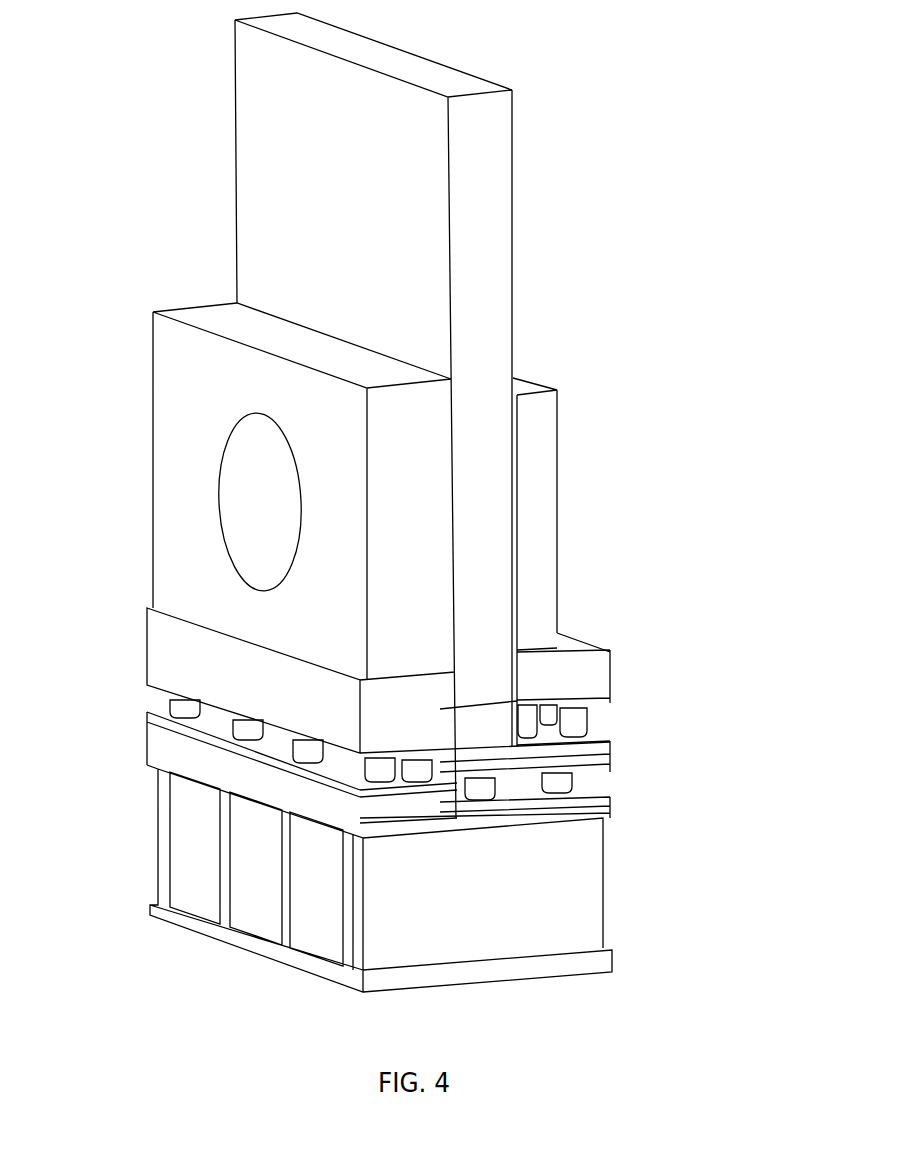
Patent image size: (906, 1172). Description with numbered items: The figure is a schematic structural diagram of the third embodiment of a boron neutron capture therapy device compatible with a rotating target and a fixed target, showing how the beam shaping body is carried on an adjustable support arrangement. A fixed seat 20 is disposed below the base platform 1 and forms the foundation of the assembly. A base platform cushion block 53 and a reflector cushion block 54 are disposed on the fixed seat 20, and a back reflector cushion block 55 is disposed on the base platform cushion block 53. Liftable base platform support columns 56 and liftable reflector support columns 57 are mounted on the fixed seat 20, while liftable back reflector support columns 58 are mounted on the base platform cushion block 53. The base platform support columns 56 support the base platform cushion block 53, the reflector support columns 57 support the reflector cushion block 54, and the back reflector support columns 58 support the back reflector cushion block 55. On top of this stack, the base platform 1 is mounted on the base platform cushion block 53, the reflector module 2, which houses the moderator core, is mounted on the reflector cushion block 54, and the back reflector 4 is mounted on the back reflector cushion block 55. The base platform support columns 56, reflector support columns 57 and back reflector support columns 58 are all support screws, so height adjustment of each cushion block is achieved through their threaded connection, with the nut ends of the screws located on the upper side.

The base platform 1 is at (292, 193).
The reflector module 2 is at (205, 387).
The back reflector 4 is at (535, 528).
The fixed seat 20 is at (370, 883).
The base platform cushion block 53 is at (490, 755).
The reflector cushion block 54 is at (273, 698).
The back reflector cushion block 55 is at (558, 672).
The base platform support columns 56 is at (603, 805).
The reflector support columns 57 is at (288, 760).
The back reflector support columns 58 is at (567, 715).